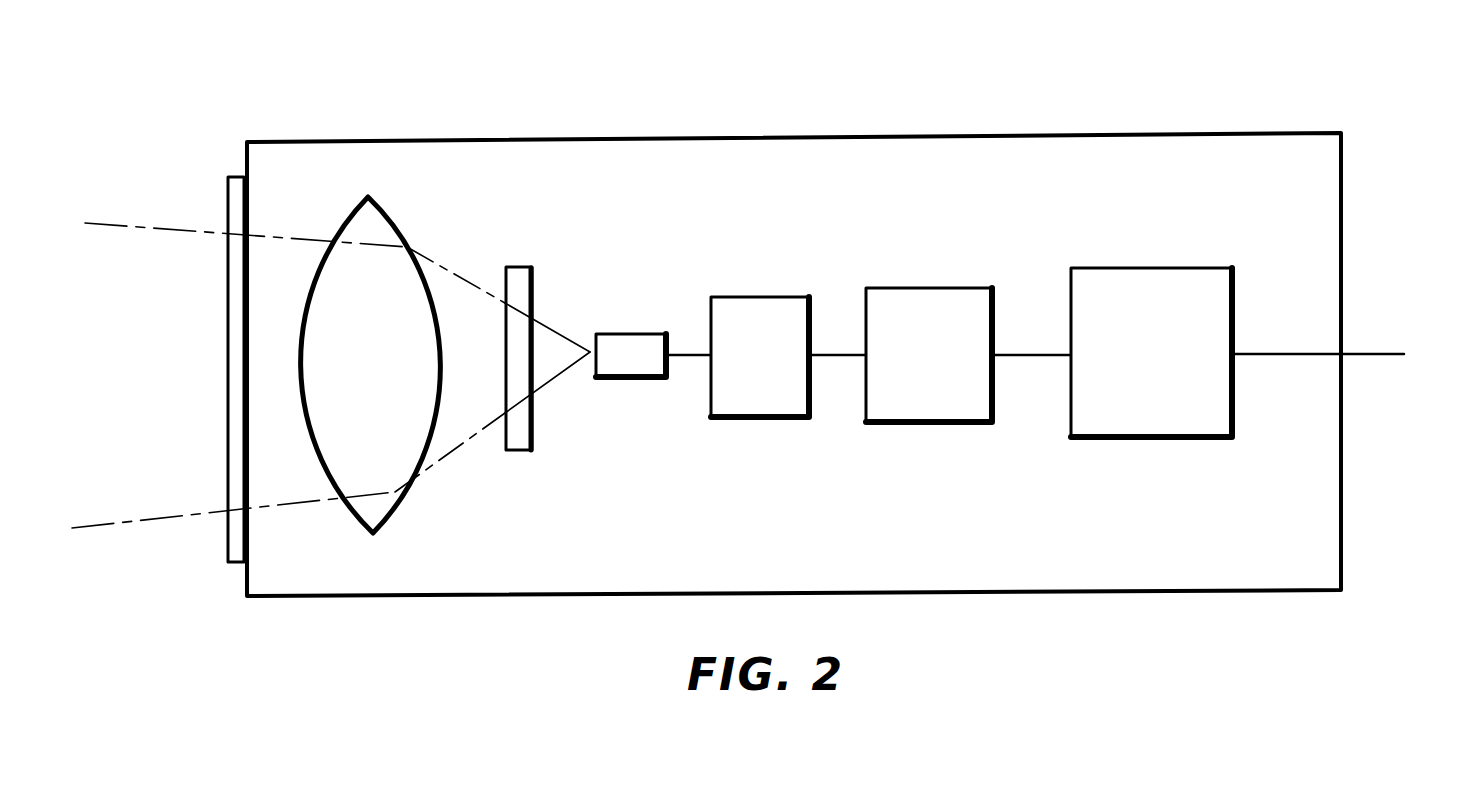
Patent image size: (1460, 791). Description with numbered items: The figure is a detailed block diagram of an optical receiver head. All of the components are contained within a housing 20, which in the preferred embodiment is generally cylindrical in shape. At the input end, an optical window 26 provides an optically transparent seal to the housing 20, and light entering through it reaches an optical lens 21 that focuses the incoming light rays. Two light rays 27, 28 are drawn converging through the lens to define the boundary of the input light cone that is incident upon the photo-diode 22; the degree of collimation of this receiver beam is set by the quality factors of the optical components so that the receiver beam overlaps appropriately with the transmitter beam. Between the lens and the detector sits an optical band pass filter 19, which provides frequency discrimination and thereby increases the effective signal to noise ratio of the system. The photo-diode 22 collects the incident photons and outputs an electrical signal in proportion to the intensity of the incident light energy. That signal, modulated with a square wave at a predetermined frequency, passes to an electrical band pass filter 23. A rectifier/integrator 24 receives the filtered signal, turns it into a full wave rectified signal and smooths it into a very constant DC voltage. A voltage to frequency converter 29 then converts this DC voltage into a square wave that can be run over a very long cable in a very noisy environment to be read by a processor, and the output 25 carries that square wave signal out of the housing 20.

The optical band pass filter 19 is at (520, 267).
The housing 20 is at (772, 138).
The optical lens 21 is at (368, 197).
The photo-diode 22 is at (637, 335).
The electrical band pass filter 23 is at (767, 297).
The rectifier/integrator 24 is at (930, 285).
The output 25 is at (1369, 352).
The optical window 26 is at (236, 176).
The light ray 27 is at (185, 227).
The light ray 28 is at (187, 513).
The voltage to frequency converter 29 is at (1152, 267).